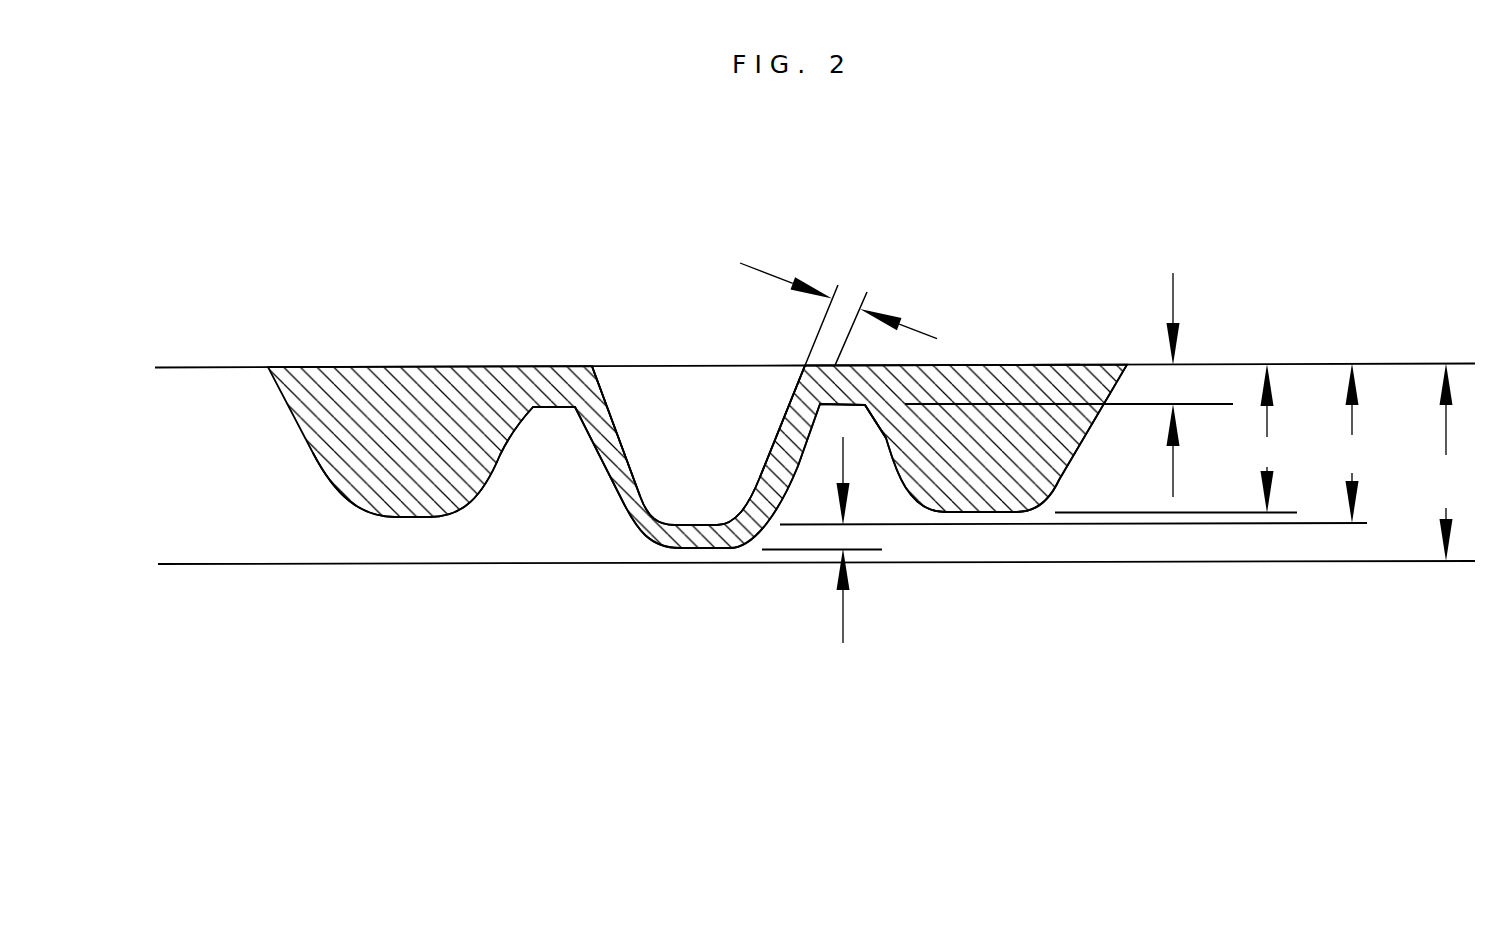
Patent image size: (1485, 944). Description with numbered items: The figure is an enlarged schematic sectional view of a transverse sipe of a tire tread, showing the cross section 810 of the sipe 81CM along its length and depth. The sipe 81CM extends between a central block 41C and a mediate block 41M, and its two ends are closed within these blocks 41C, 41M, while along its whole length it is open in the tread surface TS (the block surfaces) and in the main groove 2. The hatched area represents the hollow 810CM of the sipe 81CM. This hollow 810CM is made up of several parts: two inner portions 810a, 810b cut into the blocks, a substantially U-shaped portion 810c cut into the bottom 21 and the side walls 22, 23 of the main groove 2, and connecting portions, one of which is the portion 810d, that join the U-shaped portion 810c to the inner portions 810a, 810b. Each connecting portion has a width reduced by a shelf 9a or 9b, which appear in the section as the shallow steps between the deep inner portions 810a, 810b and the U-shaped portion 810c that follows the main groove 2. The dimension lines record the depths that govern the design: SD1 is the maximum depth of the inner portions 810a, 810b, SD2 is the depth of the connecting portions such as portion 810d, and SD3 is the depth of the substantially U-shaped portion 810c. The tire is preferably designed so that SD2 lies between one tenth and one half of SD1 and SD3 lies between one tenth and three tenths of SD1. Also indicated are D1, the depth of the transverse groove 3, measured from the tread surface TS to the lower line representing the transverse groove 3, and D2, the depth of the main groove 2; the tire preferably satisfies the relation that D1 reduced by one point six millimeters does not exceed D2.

The main groove 2 is at (670, 390).
The transverse groove 3 is at (193, 563).
The shelf 9a is at (543, 428).
The shelf 9b is at (873, 458).
The bottom of the main groove 21 is at (702, 525).
The side wall of the main groove 22 is at (622, 455).
The side wall of the main groove 23 is at (768, 455).
The central block 41C is at (205, 367).
The mediate block 41M is at (1215, 365).
The tread surface TS is at (1036, 365).
The cross section of the sipe 810 is at (348, 442).
The inner portion 810a is at (417, 478).
The inner portion 810b is at (997, 480).
The substantially U-shaped portion 810c is at (672, 550).
The connecting portion 810d is at (565, 377).
The hollow 810CM is at (325, 392).
The sipe 81CM is at (416, 418).
The maximum depth of the inner portions SD1 is at (1177, 438).
The depth of the connecting portions SD2 is at (1069, 371).
The depth of the substantially U-shaped portion SD3 is at (814, 466).
The depth of the transverse groove D1 is at (1457, 463).
The depth of the main groove D2 is at (1079, 444).